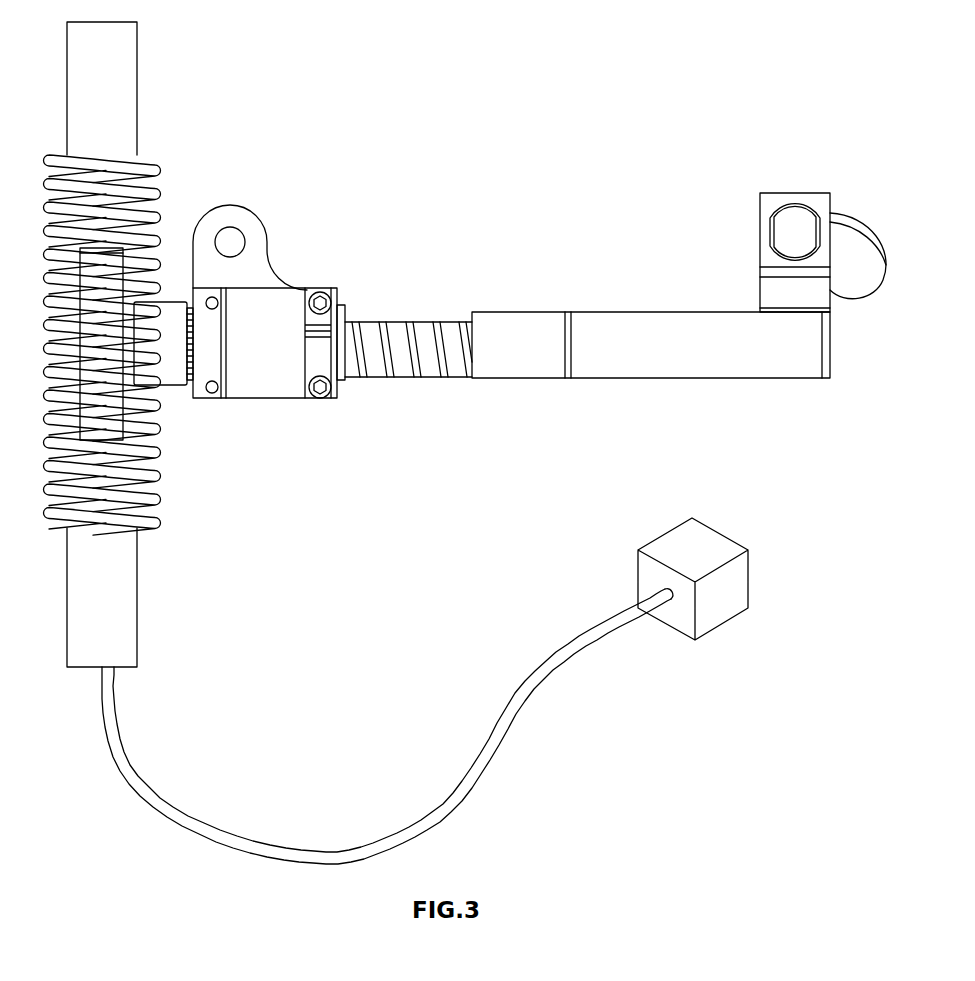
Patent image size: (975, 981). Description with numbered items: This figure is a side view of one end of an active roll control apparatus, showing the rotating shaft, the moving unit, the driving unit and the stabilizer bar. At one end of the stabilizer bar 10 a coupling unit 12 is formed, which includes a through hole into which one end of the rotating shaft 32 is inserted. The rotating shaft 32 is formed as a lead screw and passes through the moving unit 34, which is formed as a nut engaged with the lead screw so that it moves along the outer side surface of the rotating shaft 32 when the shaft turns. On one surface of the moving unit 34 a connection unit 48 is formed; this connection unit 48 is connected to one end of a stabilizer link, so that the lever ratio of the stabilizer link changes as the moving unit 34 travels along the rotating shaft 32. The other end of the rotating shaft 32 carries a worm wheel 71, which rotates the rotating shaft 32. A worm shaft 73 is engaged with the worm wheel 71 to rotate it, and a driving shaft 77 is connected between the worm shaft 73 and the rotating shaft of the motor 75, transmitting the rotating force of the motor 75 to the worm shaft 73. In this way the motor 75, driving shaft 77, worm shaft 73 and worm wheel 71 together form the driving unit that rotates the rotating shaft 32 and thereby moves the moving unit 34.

The stabilizer bar 10 is at (853, 222).
The coupling unit 12 is at (540, 312).
The rotating shaft 32 is at (400, 370).
The moving unit 34 is at (265, 400).
The connection unit 48 is at (230, 208).
The worm wheel 71 is at (97, 250).
The worm shaft 73 is at (155, 505).
The motor 75 is at (705, 537).
The driving shaft 77 is at (243, 822).